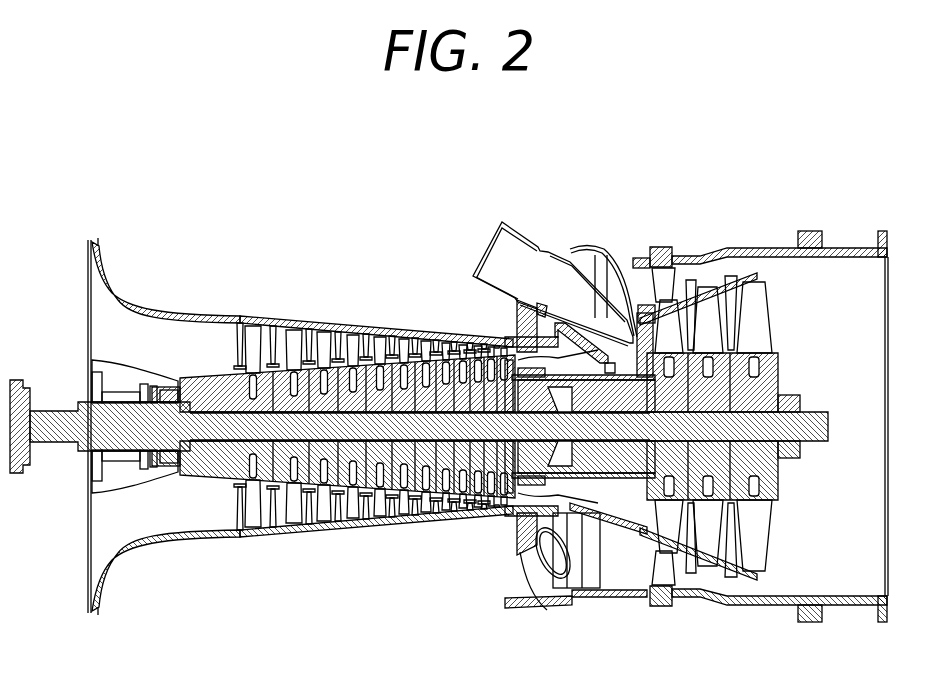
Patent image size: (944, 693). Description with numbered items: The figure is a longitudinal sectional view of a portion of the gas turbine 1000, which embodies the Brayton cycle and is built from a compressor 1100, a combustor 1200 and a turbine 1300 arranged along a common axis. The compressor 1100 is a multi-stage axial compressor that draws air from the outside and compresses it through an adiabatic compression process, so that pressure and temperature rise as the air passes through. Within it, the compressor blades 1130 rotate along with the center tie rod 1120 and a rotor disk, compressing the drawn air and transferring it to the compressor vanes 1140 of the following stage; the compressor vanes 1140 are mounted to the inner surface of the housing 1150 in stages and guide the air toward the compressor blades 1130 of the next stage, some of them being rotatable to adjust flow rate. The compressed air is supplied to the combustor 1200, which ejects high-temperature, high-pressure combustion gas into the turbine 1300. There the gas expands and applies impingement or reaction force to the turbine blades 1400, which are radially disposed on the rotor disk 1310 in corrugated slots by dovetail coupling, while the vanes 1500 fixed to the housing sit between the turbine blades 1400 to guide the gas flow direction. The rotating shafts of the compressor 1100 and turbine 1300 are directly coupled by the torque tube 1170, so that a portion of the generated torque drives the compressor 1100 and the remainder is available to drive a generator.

The gas turbine 1000 is at (178, 131).
The compressor 1100 is at (326, 538).
The center tie rod 1120 is at (422, 430).
The compressor blades 1130 is at (252, 342).
The compressor vanes 1140 is at (270, 335).
The housing 1150 is at (373, 342).
The torque tube 1170 is at (571, 462).
The combustor 1200 is at (511, 213).
The turbine 1300 is at (683, 496).
The rotor disk 1310 is at (770, 363).
The turbine blades 1400 is at (718, 318).
The vanes 1500 is at (700, 318).